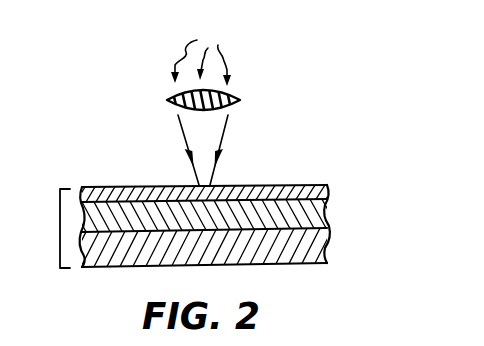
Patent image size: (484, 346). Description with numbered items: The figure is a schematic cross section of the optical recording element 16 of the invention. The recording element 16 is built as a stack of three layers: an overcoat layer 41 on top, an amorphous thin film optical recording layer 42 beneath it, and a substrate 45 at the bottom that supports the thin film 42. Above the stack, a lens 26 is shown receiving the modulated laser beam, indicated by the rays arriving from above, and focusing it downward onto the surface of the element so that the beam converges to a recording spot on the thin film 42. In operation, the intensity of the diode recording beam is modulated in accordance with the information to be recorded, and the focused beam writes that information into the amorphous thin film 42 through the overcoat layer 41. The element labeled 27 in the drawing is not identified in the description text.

The optical recording element 16 is at (56, 230).
The lens 26 is at (201, 55).
The focusing lens 27 is at (240, 96).
The overcoat layer 41 is at (325, 186).
The amorphous thin film optical recording layer 42 is at (328, 211).
The substrate 45 is at (331, 251).